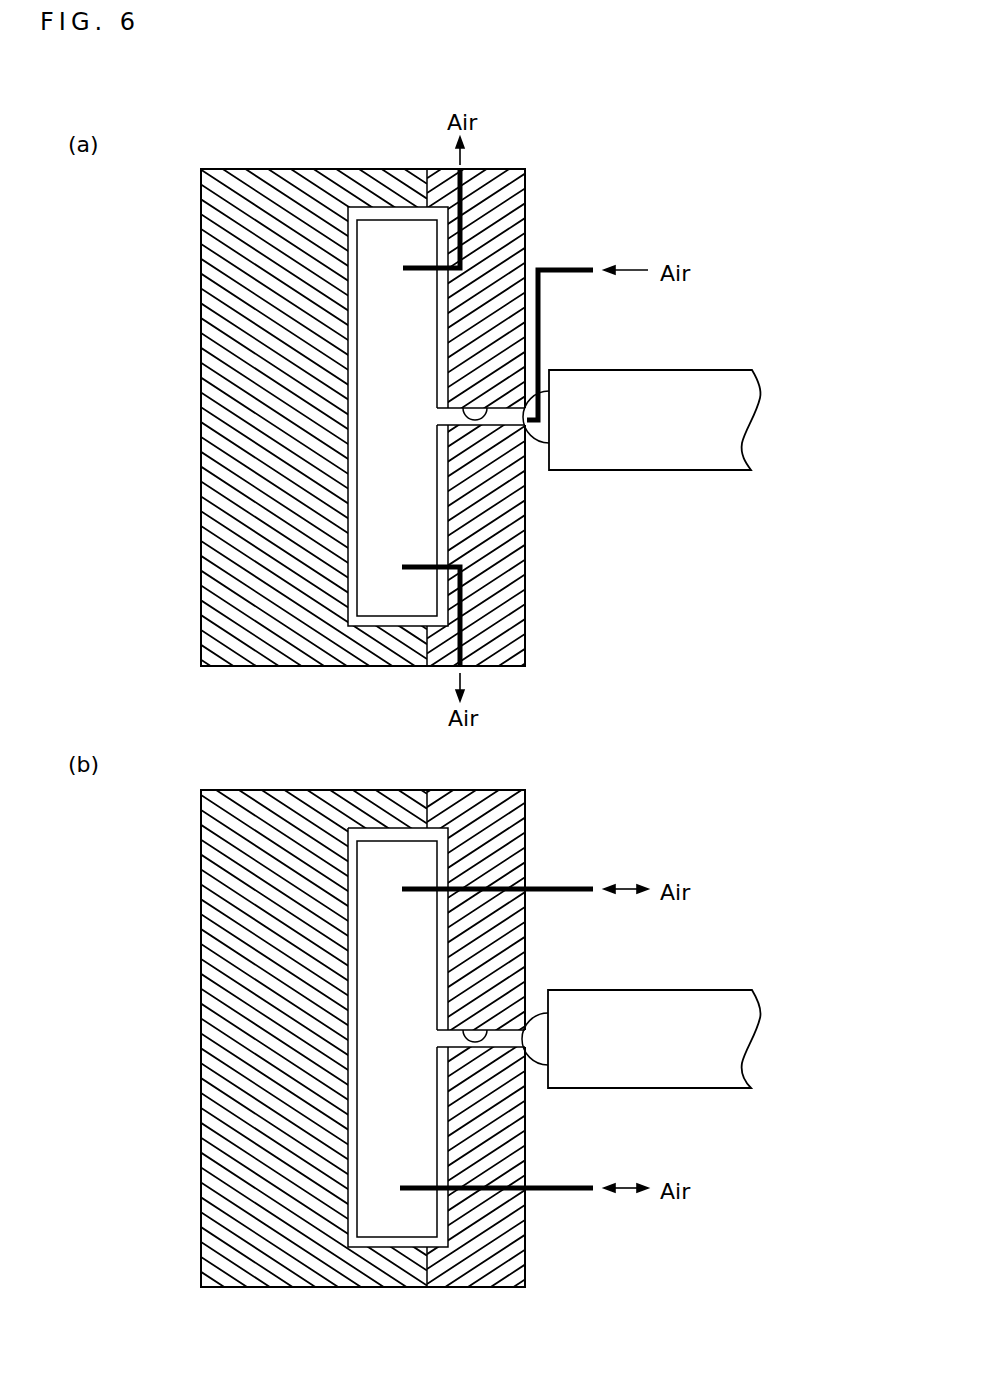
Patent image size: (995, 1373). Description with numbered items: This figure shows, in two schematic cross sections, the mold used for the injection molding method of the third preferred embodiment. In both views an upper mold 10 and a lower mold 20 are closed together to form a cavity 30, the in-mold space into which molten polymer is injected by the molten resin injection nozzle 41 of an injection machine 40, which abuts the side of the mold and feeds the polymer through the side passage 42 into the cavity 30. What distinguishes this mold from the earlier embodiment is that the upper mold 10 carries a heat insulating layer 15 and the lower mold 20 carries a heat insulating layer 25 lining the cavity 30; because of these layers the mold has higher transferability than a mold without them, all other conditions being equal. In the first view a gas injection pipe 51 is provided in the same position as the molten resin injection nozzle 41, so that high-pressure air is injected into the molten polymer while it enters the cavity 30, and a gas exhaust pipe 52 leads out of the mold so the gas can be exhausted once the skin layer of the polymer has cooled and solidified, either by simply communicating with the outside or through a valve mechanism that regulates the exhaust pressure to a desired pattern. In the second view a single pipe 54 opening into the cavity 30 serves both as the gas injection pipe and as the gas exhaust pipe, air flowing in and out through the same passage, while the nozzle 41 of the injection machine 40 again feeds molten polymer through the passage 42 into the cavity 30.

The upper mold 10 is at (500, 652).
The heat insulating layer 15 is at (440, 547).
The lower mold 20 is at (220, 635).
The heat insulating layer 25 is at (352, 275).
The cavity 30 is at (378, 502).
The injection machine 40 is at (648, 433).
The molten resin injection nozzle 41 is at (545, 444).
The passage 42 is at (492, 407).
The gas injection pipe 51 is at (552, 268).
The gas exhaust pipe 52 is at (462, 188).
The pipe 54 is at (549, 887).